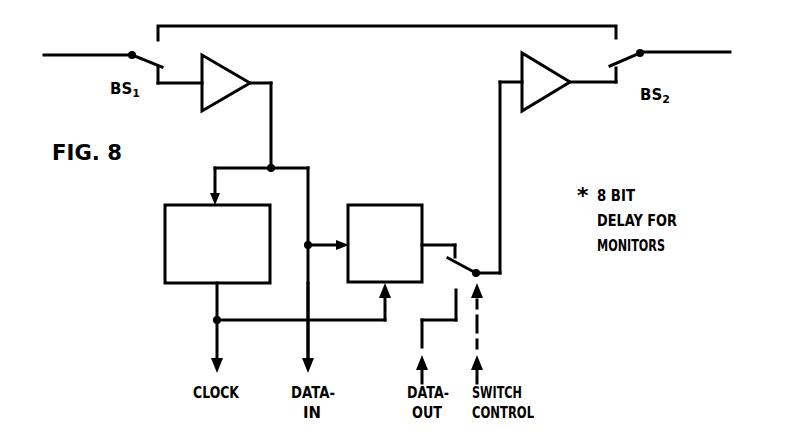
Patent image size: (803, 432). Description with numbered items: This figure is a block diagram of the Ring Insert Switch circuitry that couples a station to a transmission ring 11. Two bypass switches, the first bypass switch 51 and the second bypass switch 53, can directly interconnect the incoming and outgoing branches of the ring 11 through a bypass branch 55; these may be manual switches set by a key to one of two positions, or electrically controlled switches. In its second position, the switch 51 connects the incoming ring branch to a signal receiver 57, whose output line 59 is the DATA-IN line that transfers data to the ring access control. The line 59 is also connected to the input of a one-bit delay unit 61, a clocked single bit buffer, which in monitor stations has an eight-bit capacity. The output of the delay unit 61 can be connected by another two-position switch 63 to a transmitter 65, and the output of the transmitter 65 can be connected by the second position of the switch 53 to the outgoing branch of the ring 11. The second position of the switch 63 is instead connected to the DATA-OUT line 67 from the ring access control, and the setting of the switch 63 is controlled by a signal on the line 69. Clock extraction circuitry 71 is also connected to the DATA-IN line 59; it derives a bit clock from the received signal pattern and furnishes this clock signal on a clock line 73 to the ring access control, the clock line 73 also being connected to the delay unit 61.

The transmission ring 11 is at (85, 58).
The bypass switch BS1 51 is at (152, 54).
The bypass switch BS2 53 is at (636, 52).
The bypass branch 55 is at (378, 28).
The signal receiver 57 is at (215, 105).
The output line (DATA-IN line) 59 is at (311, 333).
The 1-bit delay unit 61 is at (368, 205).
The two-position switch 63 is at (464, 258).
The transmitter 65 is at (540, 106).
The DATA-OUT line 67 is at (421, 343).
The switch control line 69 is at (480, 327).
The clock extraction circuitry 71 is at (166, 226).
The clock line 73 is at (216, 338).